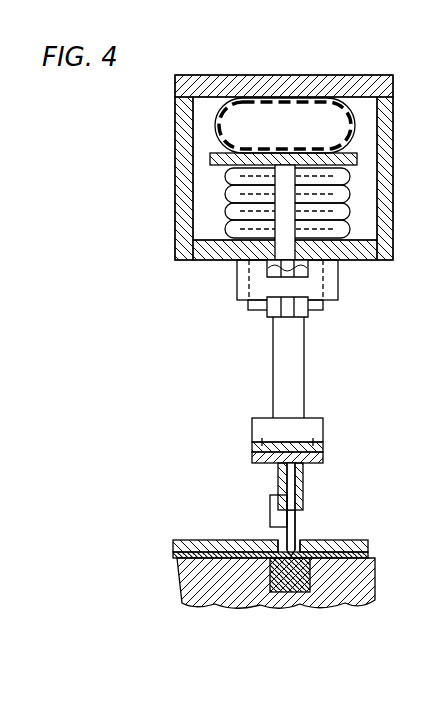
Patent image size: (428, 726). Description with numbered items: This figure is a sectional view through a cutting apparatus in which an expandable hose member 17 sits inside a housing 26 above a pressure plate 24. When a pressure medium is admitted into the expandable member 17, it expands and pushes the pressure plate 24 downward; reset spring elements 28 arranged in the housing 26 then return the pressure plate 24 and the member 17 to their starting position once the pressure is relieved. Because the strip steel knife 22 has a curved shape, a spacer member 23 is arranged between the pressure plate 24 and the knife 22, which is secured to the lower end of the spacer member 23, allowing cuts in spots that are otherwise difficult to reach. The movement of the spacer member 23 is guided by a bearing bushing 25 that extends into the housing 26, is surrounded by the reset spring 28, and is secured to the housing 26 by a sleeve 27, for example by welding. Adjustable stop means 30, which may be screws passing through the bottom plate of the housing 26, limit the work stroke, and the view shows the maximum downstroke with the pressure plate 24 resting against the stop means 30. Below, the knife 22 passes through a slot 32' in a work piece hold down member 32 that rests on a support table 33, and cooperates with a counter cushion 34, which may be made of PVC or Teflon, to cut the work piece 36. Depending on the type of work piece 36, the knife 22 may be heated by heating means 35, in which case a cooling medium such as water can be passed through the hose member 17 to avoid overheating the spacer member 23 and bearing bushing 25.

The expandable hose member 17 is at (318, 152).
The strip steel knife 22 is at (297, 533).
The spacer member 23 is at (275, 362).
The pressure plate 24 is at (357, 159).
The bearing bushing 25 is at (320, 303).
The housing 26 is at (388, 216).
The sleeve 27 is at (237, 281).
The reset spring element 28 is at (232, 193).
The adjustable stop means 30 is at (292, 285).
The work piece hold down member 32 is at (282, 529).
The slot 32' is at (248, 524).
The support table 33 is at (195, 585).
The counter cushion 34 is at (296, 598).
The heating means 35 is at (270, 516).
The work piece 36 is at (368, 554).